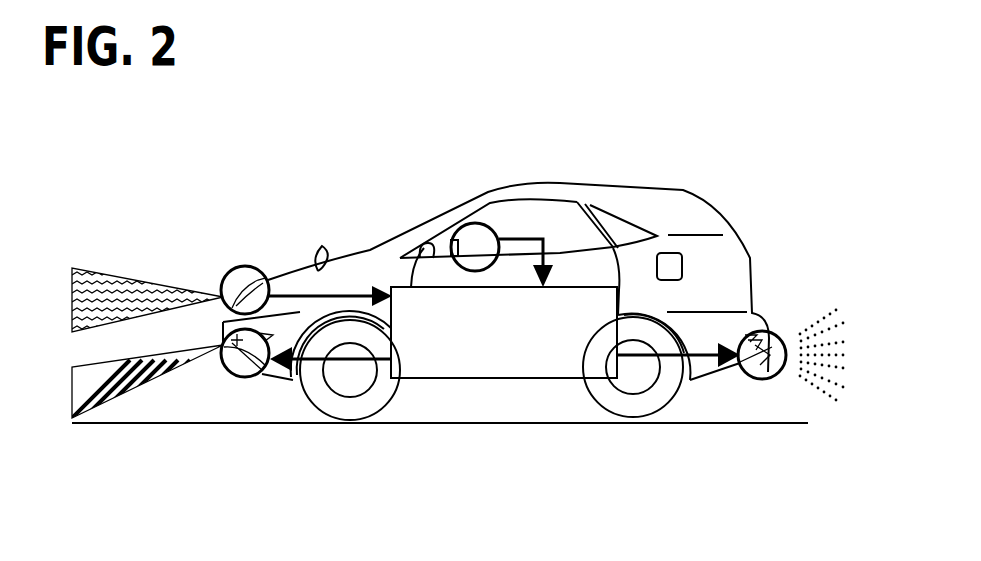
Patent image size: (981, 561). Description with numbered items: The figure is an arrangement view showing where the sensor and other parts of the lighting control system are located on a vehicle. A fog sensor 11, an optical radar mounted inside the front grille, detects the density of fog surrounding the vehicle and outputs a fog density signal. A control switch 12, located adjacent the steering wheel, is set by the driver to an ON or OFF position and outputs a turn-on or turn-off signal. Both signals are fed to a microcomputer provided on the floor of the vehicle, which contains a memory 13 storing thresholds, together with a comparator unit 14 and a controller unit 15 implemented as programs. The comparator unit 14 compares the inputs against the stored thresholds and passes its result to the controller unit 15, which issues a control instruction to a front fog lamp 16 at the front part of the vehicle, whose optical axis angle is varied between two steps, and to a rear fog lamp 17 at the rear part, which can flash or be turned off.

The fog sensor 11 is at (242, 270).
The control switch 12 is at (487, 210).
The memory 13 is at (504, 332).
The comparator unit 14 is at (504, 332).
The controller unit 15 is at (504, 332).
The front fog lamp 16 is at (242, 377).
The rear fog lamp 17 is at (755, 378).